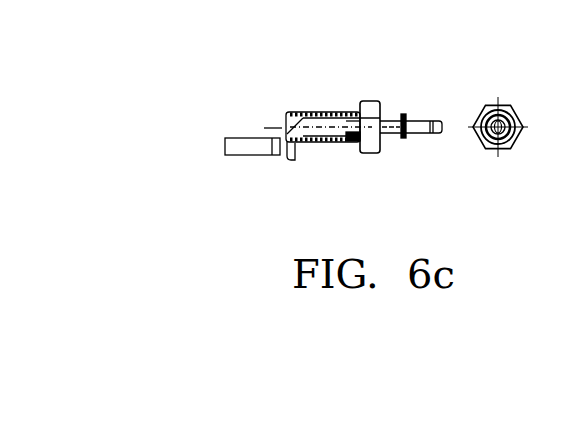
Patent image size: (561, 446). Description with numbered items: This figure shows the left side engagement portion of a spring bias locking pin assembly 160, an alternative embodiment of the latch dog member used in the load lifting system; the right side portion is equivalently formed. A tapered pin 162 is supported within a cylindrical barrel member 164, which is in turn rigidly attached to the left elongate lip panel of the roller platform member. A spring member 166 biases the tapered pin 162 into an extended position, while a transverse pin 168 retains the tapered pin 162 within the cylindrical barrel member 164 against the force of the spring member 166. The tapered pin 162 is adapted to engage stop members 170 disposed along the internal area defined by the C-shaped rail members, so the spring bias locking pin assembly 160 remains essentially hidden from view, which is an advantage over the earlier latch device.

The spring bias locking pin assembly 160 is at (308, 172).
The tapered pin 162 is at (320, 110).
The cylindrical barrel member 164 is at (338, 147).
The spring member 166 is at (372, 107).
The transverse pin 168 is at (408, 141).
The stop members 170 is at (236, 151).